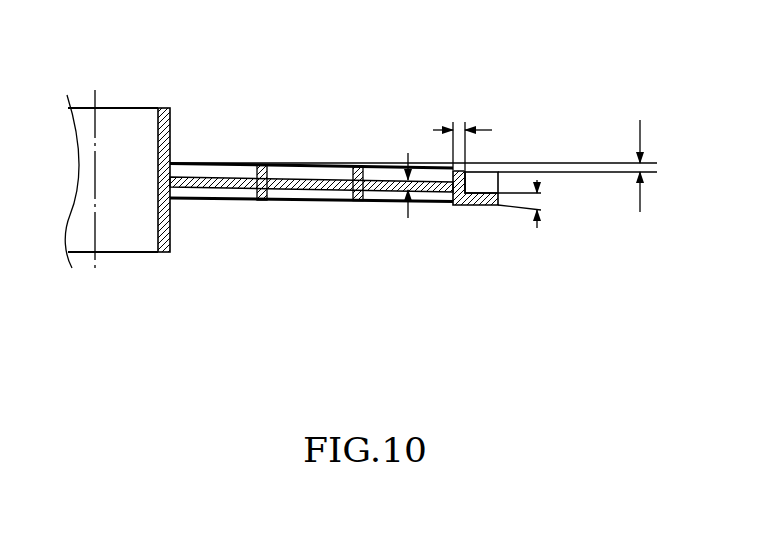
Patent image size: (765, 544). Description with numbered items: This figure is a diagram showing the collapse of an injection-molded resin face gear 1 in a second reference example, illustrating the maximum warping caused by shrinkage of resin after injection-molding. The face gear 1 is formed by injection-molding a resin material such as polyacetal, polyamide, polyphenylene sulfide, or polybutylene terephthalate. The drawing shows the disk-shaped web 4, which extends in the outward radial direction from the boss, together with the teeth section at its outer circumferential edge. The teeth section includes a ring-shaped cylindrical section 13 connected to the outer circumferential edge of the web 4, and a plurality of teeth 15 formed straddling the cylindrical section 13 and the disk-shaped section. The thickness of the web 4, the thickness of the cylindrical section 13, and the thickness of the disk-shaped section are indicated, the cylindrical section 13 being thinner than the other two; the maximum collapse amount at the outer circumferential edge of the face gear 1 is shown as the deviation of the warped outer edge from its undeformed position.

The injection-molded resin face gear 1 is at (377, 161).
The web 4 is at (378, 190).
The cylindrical section 13 is at (453, 171).
The teeth 15 is at (488, 174).